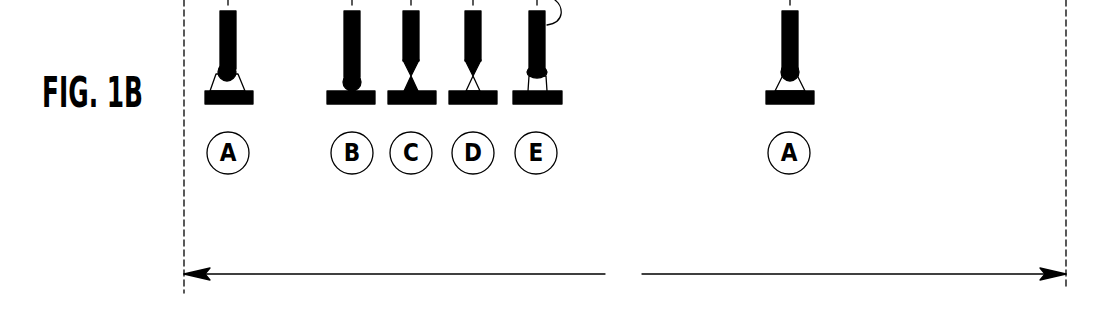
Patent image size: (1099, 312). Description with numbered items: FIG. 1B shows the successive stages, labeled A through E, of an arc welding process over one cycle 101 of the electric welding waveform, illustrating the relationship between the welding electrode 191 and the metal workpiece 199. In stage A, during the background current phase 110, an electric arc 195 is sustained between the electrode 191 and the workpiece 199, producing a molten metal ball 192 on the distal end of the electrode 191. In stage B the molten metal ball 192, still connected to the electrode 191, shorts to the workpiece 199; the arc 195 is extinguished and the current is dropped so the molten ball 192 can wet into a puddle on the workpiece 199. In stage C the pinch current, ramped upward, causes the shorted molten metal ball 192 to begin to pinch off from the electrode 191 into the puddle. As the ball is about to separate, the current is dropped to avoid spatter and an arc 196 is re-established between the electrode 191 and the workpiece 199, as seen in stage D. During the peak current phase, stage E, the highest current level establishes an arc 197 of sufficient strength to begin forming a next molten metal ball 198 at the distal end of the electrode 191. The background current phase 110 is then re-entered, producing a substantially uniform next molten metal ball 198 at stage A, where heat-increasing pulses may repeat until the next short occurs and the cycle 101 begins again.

The cycle 101 is at (625, 273).
The background current phase 110 is at (1027, 145).
The welding electrode 191 is at (237, 20).
The molten metal ball 192 is at (218, 68).
The electric arc 195 is at (237, 82).
The arc 196 is at (467, 80).
The arc 197 is at (548, 80).
The next molten metal ball 198 is at (547, 68).
The metal workpiece 199 is at (253, 97).